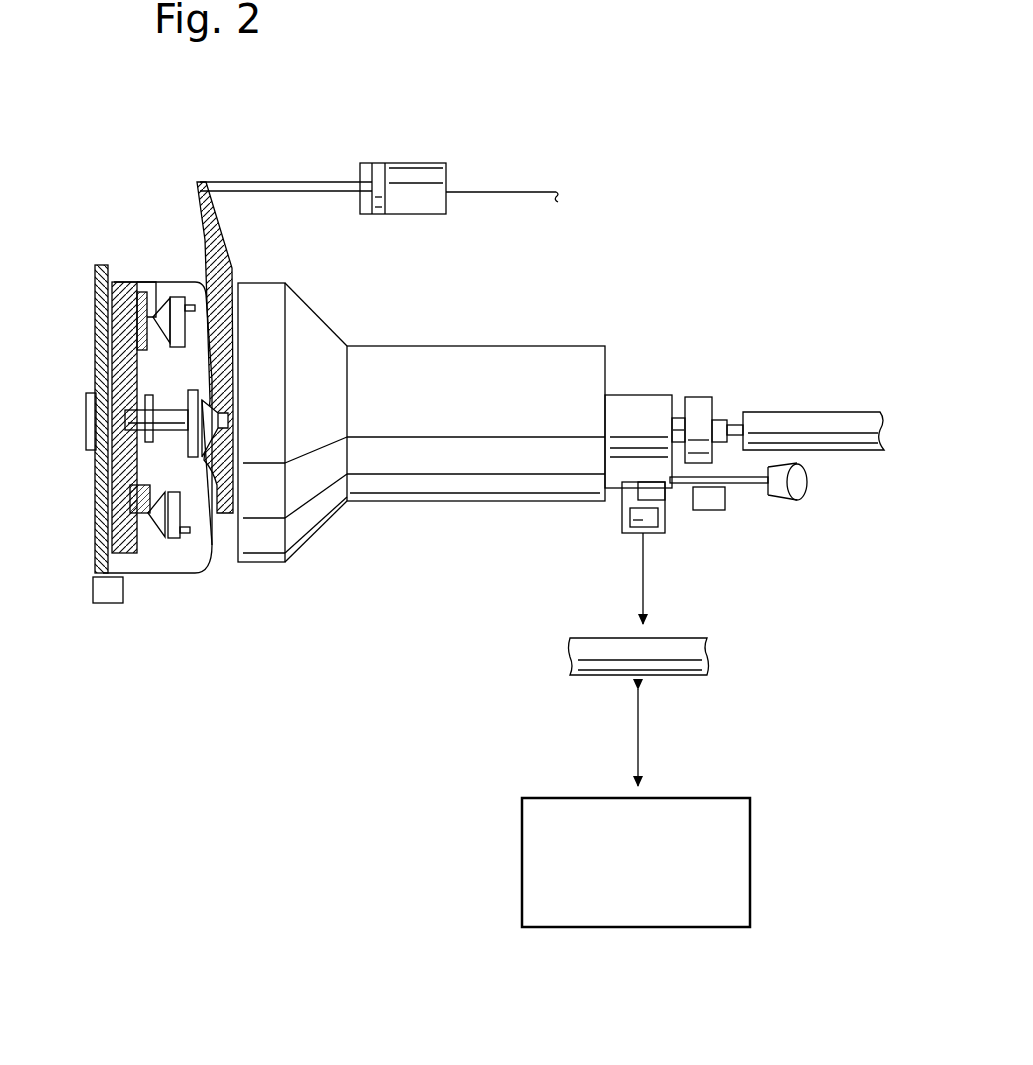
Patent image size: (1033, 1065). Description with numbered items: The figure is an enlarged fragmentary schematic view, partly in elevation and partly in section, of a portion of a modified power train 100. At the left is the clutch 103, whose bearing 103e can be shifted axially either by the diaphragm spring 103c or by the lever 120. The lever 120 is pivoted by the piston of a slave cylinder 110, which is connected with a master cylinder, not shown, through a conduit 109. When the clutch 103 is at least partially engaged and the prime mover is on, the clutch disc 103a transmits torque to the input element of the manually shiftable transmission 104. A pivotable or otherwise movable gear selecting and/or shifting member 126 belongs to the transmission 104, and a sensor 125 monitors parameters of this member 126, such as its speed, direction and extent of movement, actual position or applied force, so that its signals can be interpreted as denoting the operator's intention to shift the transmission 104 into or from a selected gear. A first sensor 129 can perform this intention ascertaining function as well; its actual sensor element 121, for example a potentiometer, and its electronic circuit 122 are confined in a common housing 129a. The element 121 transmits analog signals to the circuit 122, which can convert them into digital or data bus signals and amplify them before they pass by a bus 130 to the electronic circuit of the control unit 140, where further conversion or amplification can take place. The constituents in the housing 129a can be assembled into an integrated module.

The modified power train 100 is at (500, 140).
The clutch 103 is at (150, 293).
The clutch disc 103a is at (145, 380).
The diaphragm spring 103c is at (202, 335).
The bearing 103e is at (198, 490).
The manually shiftable transmission 104 is at (486, 449).
The conduit 109 is at (538, 190).
The slave cylinder 110 is at (417, 177).
The lever 120 is at (215, 210).
The sensor element 121 is at (650, 490).
The electronic circuit 122 is at (637, 520).
The sensor 125 is at (725, 498).
The gear selecting and/or shifting member 126 is at (798, 480).
The first sensor 129 is at (680, 545).
The housing 129a is at (620, 503).
The bus 130 is at (598, 667).
The control unit 140 is at (664, 877).